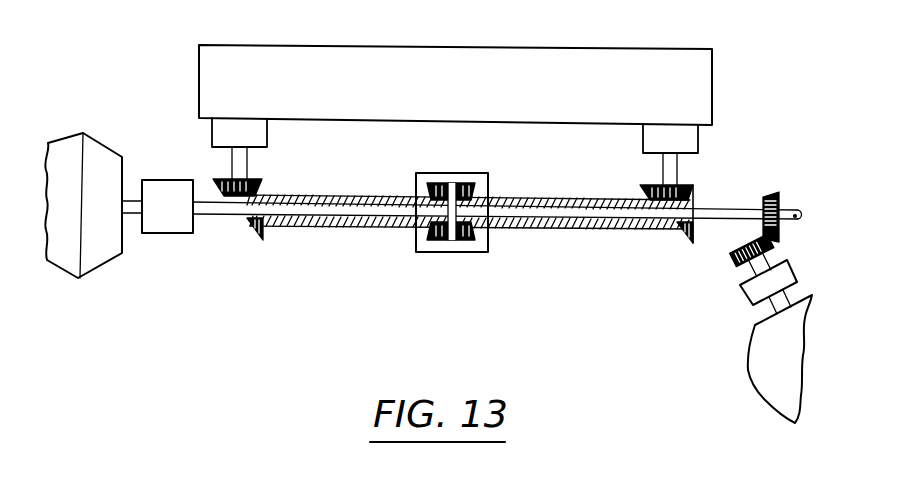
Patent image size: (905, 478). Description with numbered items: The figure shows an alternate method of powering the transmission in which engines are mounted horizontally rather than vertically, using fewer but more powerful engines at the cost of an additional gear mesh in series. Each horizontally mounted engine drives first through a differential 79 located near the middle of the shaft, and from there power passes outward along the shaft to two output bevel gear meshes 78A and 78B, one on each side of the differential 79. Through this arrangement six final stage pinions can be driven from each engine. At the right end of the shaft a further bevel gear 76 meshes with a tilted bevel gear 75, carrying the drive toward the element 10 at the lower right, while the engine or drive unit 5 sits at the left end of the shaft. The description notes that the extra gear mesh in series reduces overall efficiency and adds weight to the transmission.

The motor 5 is at (90, 133).
The output bevel gear mesh 78A is at (253, 232).
The output bevel gear mesh 78B is at (678, 232).
The differential 79 is at (450, 252).
The bevel gear 76 is at (765, 197).
The bevel gear 75 is at (736, 256).
The drive member / frame 10 is at (750, 386).